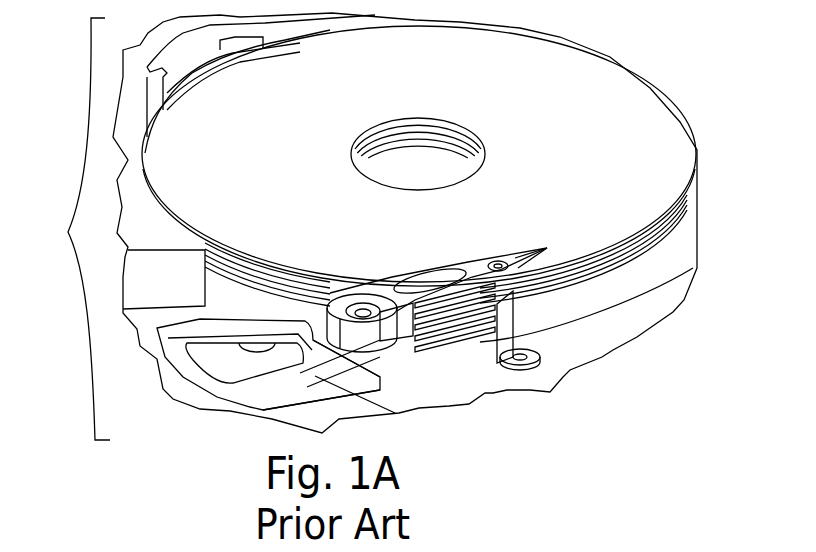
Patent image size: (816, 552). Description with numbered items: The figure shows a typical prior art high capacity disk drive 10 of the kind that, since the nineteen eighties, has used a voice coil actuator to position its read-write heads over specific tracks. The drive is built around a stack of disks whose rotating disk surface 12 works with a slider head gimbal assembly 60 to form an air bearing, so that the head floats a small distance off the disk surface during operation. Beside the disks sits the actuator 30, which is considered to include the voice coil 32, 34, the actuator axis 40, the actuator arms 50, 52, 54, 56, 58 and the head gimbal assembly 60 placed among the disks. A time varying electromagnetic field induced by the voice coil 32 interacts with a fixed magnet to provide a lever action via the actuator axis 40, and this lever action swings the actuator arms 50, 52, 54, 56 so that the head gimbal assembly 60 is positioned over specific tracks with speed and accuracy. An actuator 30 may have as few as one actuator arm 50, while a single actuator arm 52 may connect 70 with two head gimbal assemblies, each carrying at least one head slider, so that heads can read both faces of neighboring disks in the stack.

The high capacity disk drive 10 is at (365, 226).
The rotating disk surface 12 is at (613, 85).
The actuator 30 is at (400, 363).
The voice coil 32 is at (227, 393).
The voice coil 34 is at (318, 377).
The actuator axis 40 is at (357, 303).
The actuator arm 50 is at (456, 267).
The actuator arm 52 is at (447, 356).
The actuator arm 54 is at (440, 345).
The actuator arm 56 is at (433, 352).
The actuator arm 58 is at (457, 350).
The head gimbal assembly 60 is at (528, 252).
The connection 70 is at (500, 259).